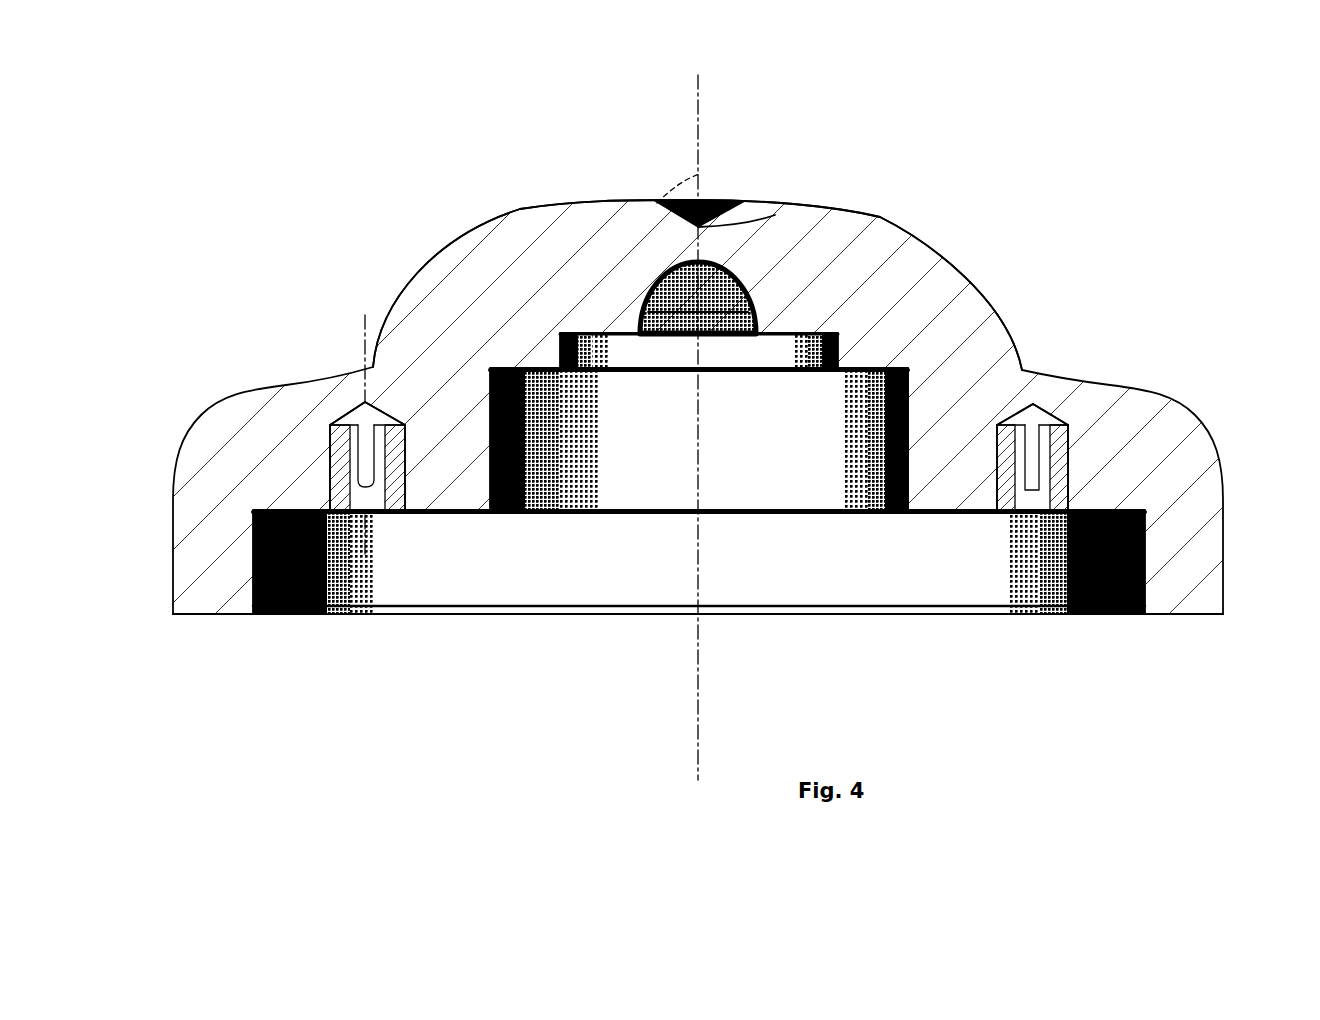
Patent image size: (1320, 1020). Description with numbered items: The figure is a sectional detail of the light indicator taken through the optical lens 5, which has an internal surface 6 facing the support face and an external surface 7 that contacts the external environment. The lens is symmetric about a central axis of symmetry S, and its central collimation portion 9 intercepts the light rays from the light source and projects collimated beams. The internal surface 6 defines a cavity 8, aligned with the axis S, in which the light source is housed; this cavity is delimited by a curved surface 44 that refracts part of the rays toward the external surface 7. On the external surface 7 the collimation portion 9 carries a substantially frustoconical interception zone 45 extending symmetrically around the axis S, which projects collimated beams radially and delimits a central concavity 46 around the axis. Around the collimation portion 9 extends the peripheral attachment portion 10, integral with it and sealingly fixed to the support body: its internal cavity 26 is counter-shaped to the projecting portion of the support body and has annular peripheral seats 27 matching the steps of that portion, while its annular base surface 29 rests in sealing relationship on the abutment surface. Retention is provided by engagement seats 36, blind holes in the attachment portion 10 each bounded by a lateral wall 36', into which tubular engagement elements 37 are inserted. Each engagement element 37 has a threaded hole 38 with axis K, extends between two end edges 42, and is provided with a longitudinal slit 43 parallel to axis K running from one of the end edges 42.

The optical lens 5 is at (1172, 120).
The internal surface 6 is at (889, 450).
The external surface 7 is at (1010, 333).
The cavity 8 is at (683, 294).
The collimation portion 9 is at (948, 272).
The attachment portion 10 is at (1207, 505).
The internal cavity 26 is at (699, 562).
The peripheral seats 27 is at (578, 352).
The base surface 29 is at (205, 615).
The engagement seat 36 is at (716, 452).
The lateral wall 36' is at (733, 389).
The engagement element 37 is at (340, 446).
The threaded hole 38 is at (355, 512).
The end edges 42 is at (343, 425).
The longitudinal slit 43 is at (378, 450).
The curved surface 44 is at (742, 297).
The interception zone 45 is at (775, 215).
The central concavity 46 is at (733, 198).
The central axis of symmetry S is at (700, 107).
The axis K is at (365, 330).